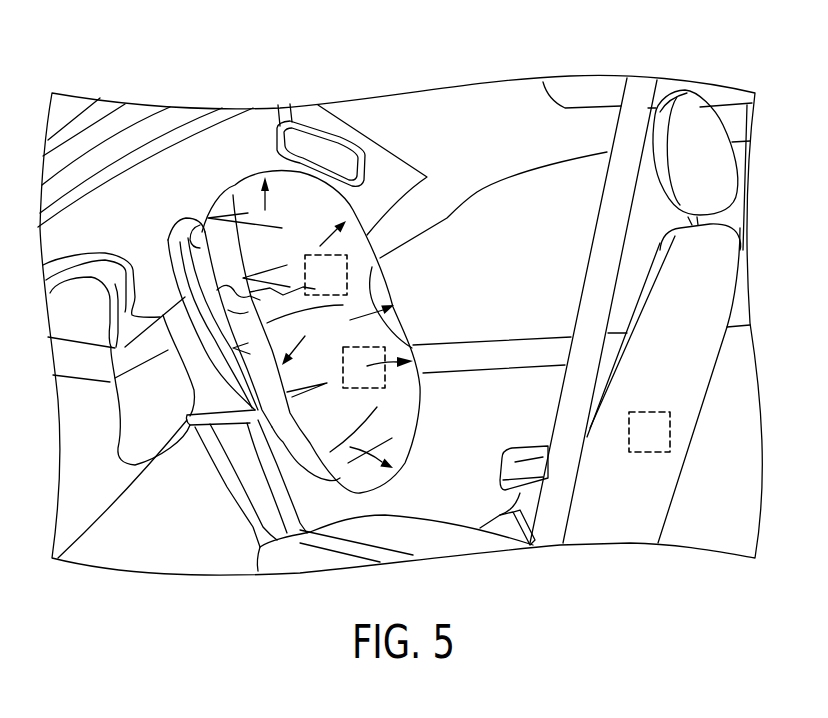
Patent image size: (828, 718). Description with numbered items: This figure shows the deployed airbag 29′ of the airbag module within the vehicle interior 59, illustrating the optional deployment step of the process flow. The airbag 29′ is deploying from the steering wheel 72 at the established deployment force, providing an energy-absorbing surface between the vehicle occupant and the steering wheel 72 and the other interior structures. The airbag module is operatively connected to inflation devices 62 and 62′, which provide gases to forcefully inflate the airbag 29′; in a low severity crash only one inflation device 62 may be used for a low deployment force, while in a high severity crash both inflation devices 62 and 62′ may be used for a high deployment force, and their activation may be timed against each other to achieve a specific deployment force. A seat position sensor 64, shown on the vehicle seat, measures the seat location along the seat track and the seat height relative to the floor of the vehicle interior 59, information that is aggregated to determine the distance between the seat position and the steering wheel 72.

The vehicle interior 59 is at (460, 100).
The steering wheel 72 is at (176, 233).
The airbag 29′ is at (366, 242).
The inflation device 62 is at (313, 253).
The inflation device 62′ is at (385, 380).
The seat position sensor 64 is at (658, 412).